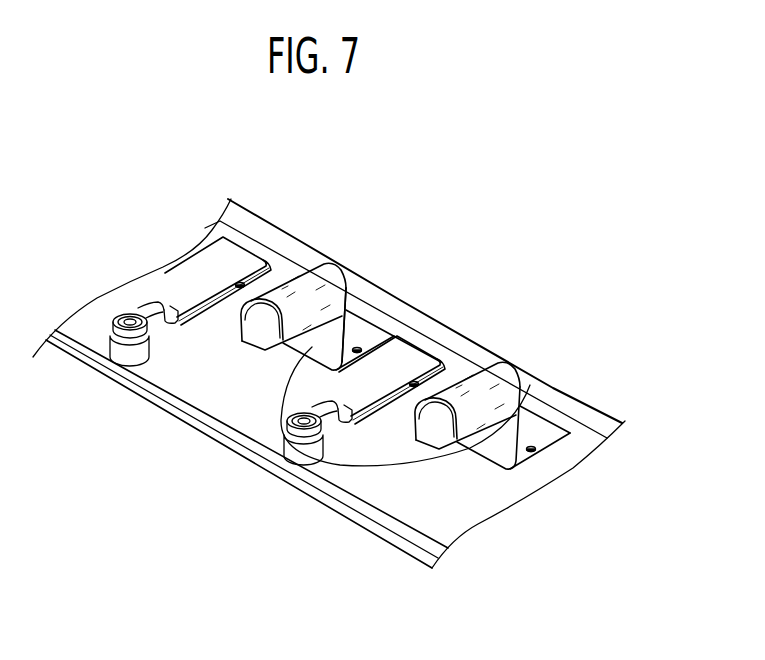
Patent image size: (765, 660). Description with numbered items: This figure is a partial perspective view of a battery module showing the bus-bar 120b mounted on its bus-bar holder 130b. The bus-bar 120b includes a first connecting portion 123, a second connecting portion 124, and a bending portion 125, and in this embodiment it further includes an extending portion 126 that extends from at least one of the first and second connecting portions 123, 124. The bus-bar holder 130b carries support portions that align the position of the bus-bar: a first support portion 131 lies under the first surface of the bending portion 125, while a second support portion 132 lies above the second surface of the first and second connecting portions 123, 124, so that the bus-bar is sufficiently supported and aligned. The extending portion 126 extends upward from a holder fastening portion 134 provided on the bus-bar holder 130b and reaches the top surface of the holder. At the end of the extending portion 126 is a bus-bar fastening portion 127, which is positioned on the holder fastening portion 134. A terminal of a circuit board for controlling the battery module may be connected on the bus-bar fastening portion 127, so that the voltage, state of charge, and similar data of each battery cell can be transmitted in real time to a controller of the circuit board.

The bus-bar 120b is at (236, 393).
The first connecting portion 123 is at (286, 398).
The second connecting portion 124 is at (233, 300).
The bending portion 125 is at (250, 327).
The extending portion 126 is at (166, 326).
The bus-bar fastening portion 127 is at (118, 310).
The bus-bar holder 130b is at (355, 250).
The first support portion 131 is at (345, 291).
The second support portion 132 is at (440, 358).
The holder fastening portion 134 is at (503, 432).